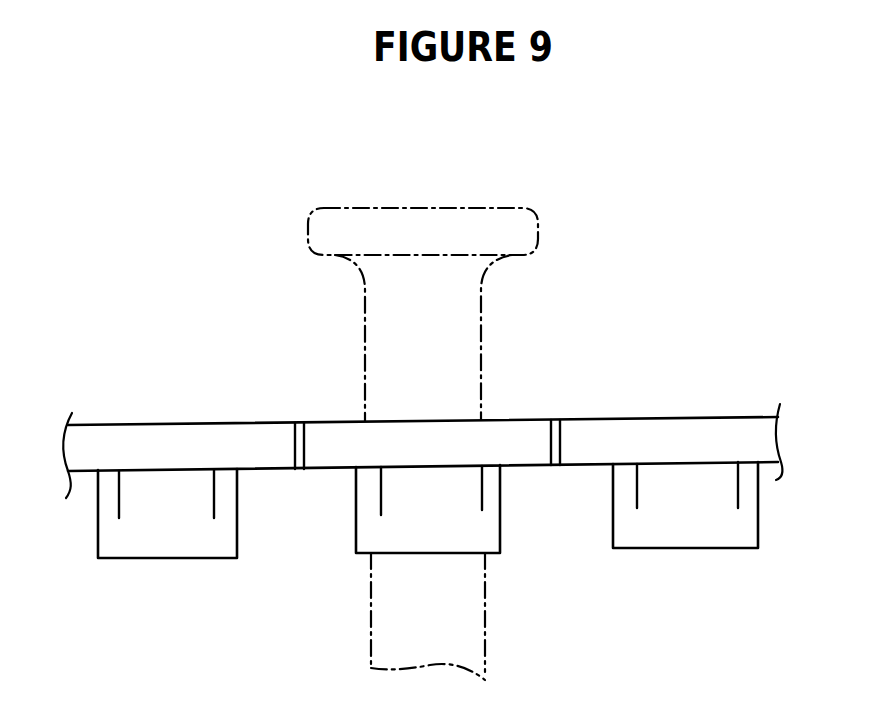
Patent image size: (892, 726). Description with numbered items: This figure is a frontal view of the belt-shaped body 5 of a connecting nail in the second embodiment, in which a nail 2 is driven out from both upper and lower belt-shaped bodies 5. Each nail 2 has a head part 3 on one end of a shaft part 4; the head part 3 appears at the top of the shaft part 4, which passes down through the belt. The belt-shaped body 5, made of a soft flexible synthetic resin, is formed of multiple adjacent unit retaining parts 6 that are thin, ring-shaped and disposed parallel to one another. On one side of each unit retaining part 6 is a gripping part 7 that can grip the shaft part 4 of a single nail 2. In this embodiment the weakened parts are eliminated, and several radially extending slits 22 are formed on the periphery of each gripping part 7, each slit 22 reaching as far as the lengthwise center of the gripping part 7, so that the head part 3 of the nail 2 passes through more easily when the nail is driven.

The nail 2 is at (391, 402).
The head part 3 is at (428, 232).
The shaft part 4 is at (447, 395).
The belt-shaped body 5 is at (458, 434).
The unit retaining part 6 is at (726, 414).
The gripping part 7 is at (195, 540).
The slit 22 is at (210, 492).